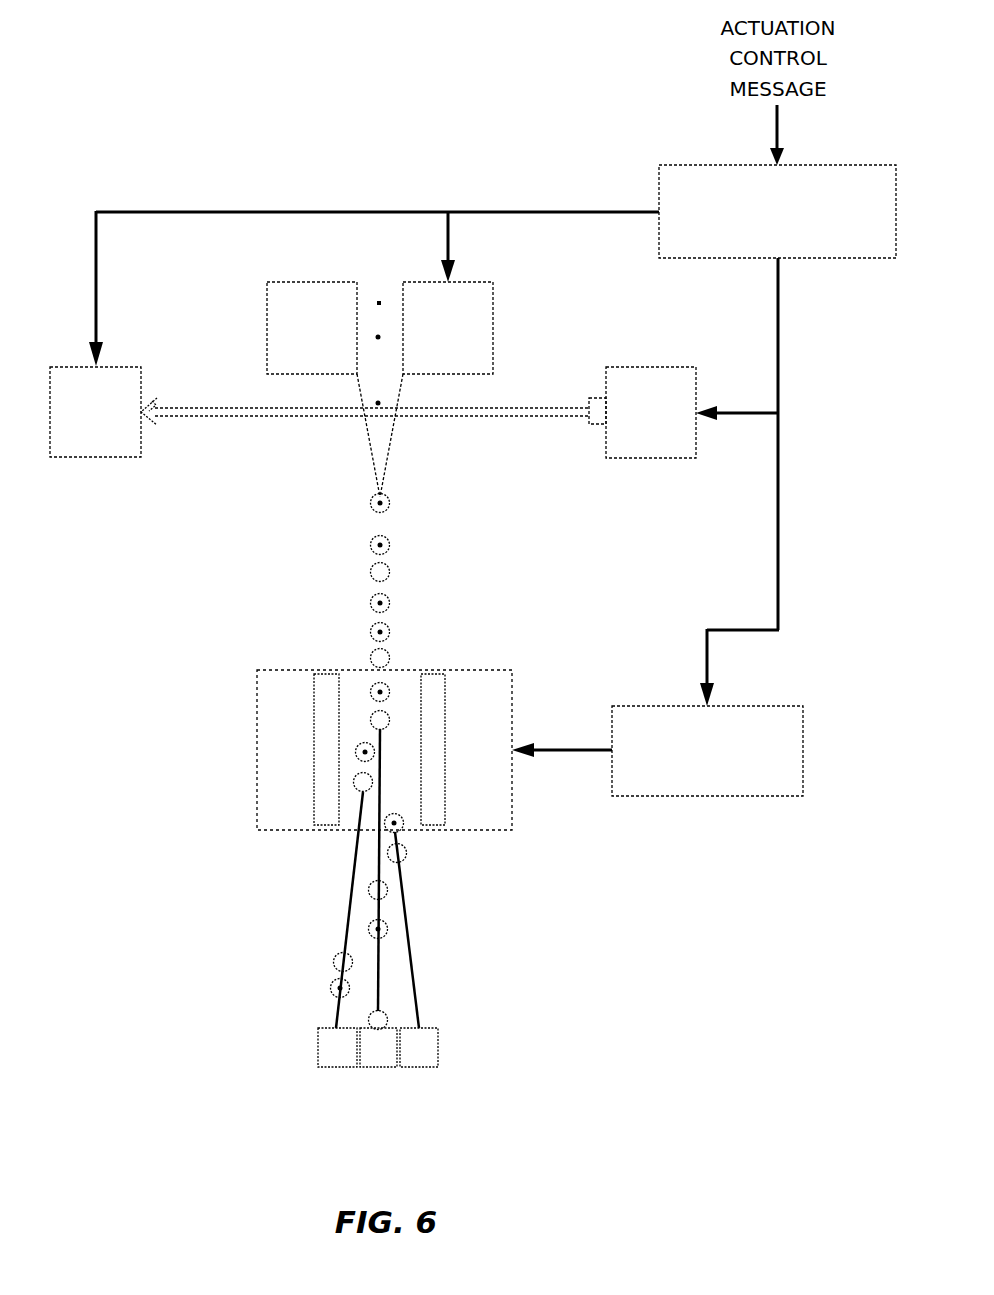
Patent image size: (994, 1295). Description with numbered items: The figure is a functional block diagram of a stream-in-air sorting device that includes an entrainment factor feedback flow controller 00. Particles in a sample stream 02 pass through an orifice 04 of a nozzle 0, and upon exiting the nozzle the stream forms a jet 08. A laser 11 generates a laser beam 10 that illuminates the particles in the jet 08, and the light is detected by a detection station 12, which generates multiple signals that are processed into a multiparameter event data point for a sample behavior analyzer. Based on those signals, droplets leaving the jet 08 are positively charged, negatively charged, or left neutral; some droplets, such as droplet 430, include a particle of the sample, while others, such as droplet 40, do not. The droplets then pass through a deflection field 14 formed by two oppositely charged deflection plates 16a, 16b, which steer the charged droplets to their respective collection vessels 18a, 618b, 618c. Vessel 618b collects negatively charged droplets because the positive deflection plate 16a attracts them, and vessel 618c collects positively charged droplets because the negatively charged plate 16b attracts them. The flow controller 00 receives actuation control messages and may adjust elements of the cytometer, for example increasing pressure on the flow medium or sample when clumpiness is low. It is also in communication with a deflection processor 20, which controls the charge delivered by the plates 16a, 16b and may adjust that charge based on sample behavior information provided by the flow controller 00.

The flow controller 00 is at (826, 165).
The sample stream 02 is at (380, 266).
The nozzle 0 is at (490, 282).
The laser beam 10 is at (493, 408).
The detection station 12 is at (118, 367).
The laser 11 is at (660, 367).
The orifice 04 is at (384, 493).
The jet 08 is at (408, 526).
The droplet 40 is at (386, 579).
The droplet 430 is at (387, 605).
The deflection field 14 is at (472, 670).
The deflection plate 16a is at (313, 751).
The deflection plate 16b is at (446, 750).
The deflection processor 20 is at (777, 706).
The collection vessel 18a is at (340, 1067).
The collection vessel 618b is at (378, 1067).
The collection vessel 618c is at (418, 1067).